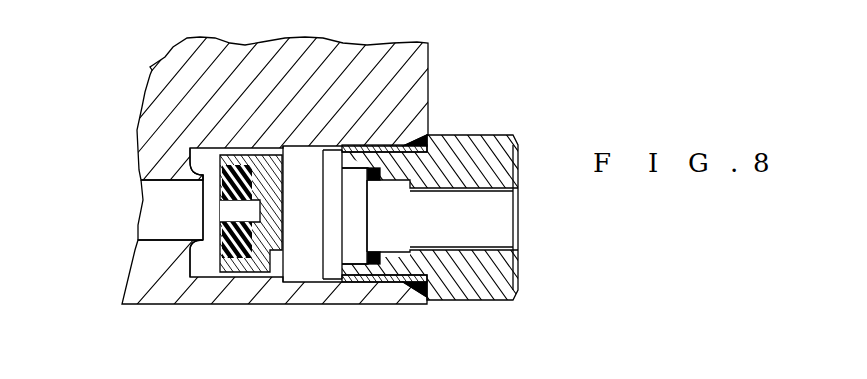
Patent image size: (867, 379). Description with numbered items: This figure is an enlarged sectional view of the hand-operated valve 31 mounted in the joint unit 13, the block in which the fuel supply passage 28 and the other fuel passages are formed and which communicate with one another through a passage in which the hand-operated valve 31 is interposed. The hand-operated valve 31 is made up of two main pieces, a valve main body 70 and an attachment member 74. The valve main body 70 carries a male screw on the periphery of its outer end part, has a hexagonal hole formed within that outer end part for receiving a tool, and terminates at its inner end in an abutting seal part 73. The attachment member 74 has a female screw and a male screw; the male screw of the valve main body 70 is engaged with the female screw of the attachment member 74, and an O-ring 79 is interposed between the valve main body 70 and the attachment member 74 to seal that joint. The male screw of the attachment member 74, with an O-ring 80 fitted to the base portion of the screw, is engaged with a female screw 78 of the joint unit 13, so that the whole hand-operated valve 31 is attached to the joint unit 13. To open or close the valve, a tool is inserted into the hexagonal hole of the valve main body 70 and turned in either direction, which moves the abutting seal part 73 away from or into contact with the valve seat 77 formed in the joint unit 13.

The joint unit 13 is at (417, 63).
The fuel supply passage 28 is at (150, 210).
The hand-operated valve 31 is at (442, 218).
The valve main body 70 is at (308, 233).
The abutting seal part 73 is at (230, 272).
The attachment member 74 is at (505, 300).
The valve seat 77 is at (191, 278).
The female screw 78 is at (356, 281).
The O-ring 79 is at (372, 265).
The O-ring 80 is at (420, 293).